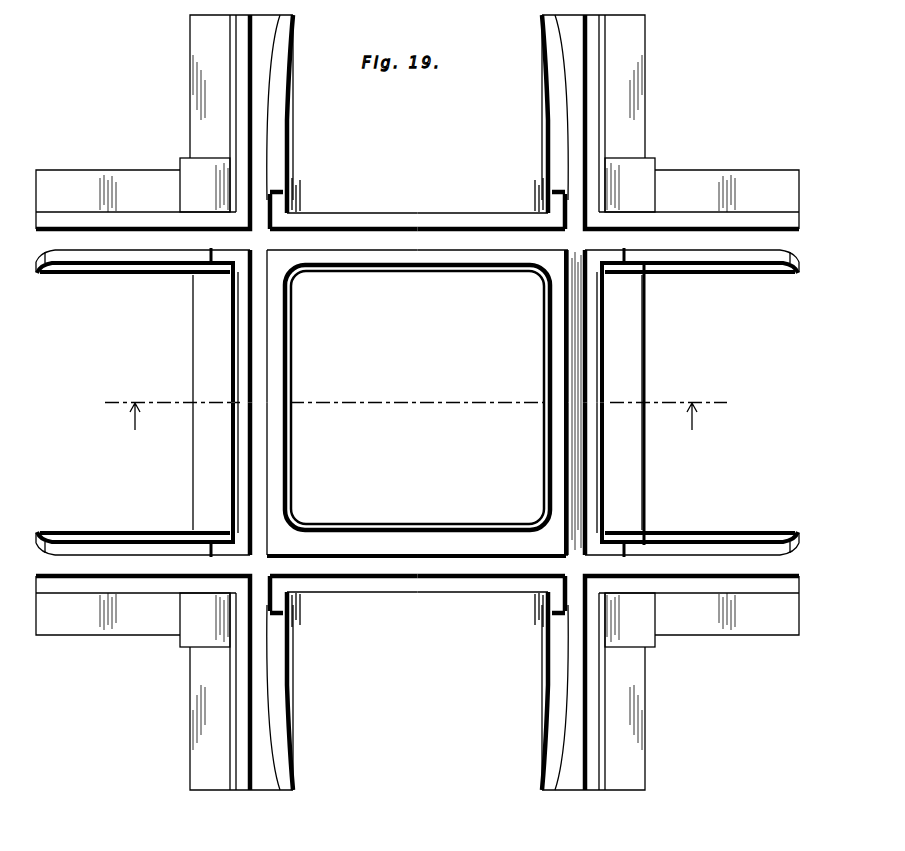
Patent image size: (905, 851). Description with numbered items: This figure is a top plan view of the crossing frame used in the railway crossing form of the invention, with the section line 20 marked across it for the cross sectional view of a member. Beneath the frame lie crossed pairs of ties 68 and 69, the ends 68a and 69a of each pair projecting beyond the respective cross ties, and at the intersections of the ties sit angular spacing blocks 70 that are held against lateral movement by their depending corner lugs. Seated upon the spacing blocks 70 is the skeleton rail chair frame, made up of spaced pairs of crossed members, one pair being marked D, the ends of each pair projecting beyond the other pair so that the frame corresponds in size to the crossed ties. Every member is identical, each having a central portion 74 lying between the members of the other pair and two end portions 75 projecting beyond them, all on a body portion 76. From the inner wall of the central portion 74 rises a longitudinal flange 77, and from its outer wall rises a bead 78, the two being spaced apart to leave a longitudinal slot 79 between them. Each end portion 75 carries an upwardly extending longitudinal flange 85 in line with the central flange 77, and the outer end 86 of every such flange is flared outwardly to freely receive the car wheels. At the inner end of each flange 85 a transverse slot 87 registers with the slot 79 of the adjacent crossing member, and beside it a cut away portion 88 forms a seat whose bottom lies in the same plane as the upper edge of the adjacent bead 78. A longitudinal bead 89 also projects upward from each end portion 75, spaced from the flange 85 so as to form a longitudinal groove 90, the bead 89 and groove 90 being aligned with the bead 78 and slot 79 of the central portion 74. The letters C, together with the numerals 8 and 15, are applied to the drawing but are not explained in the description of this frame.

The stop lug 8 is at (218, 258).
The outer wall 15 is at (295, 128).
The section line 20— 20 is at (413, 412).
The ties 68 is at (195, 343).
The ends of ties 68a is at (195, 75).
The ties 69 is at (462, 195).
The ends of ties 69a is at (103, 178).
The angular spacing blocks 70 is at (417, 402).
The central portion 74 is at (290, 346).
The end portions 75 is at (545, 100).
The body portion 76 is at (294, 440).
The longitudinal flange 77 is at (288, 486).
The bead 78 is at (246, 383).
The longitudinal slot 79 is at (365, 228).
The longitudinal flange 85 is at (548, 137).
The outer end of flange 86 is at (45, 272).
The transverse slot 87 is at (428, 411).
The cut away portion 88 is at (552, 208).
The longitudinal bead 89 is at (235, 128).
The longitudinal groove 90 is at (280, 73).
The corner C is at (426, 272).
The crossed members D is at (290, 390).